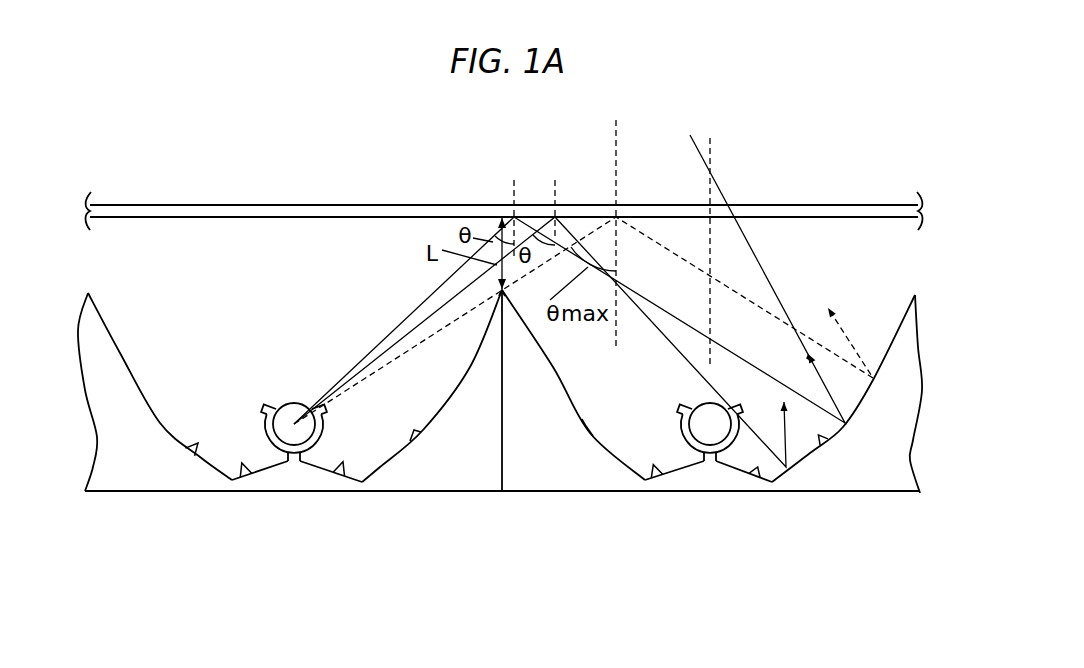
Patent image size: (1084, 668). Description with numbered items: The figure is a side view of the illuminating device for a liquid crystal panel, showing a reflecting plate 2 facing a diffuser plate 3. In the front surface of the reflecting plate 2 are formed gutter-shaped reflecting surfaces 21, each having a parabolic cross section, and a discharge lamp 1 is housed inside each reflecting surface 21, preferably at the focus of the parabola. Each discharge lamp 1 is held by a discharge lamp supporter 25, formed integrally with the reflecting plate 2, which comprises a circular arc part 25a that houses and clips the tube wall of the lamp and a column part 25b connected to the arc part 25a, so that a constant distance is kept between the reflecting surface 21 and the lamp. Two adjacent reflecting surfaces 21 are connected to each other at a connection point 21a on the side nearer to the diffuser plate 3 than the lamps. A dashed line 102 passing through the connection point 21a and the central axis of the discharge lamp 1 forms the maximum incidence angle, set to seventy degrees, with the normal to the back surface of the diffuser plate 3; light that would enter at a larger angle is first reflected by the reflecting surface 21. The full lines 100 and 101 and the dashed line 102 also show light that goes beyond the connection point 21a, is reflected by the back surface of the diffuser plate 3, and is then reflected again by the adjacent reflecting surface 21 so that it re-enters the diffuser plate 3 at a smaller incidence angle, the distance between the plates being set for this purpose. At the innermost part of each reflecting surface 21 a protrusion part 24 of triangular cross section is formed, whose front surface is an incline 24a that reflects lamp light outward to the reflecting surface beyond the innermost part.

The discharge lamp 1 is at (294, 424).
The reflecting plate 2 is at (880, 493).
The diffuser plate 3 is at (862, 212).
The reflecting surface 21 is at (192, 445).
The connection point 21a is at (500, 293).
The protrusion part 24 is at (257, 460).
The incline 24a is at (240, 466).
The discharge lamp supporter 25 is at (265, 402).
The circular arc part 25a is at (323, 432).
The column part 25b is at (298, 462).
The full line 100 is at (410, 315).
The full line 101 is at (447, 305).
The dashed line 102 is at (443, 328).